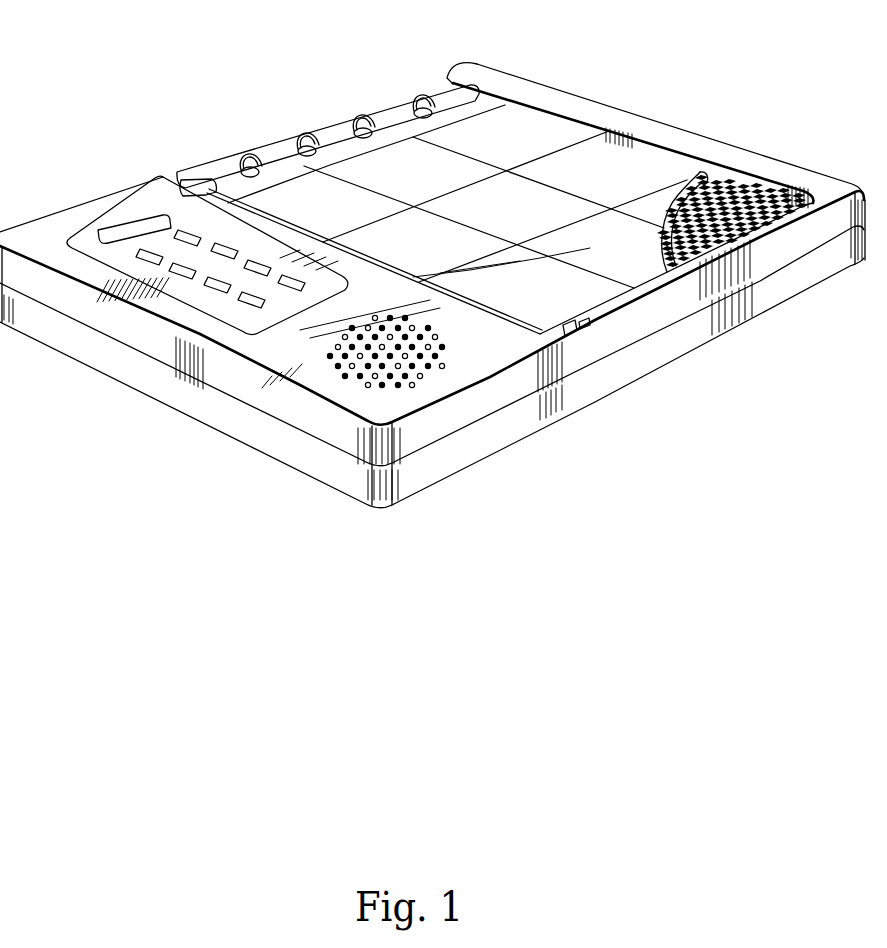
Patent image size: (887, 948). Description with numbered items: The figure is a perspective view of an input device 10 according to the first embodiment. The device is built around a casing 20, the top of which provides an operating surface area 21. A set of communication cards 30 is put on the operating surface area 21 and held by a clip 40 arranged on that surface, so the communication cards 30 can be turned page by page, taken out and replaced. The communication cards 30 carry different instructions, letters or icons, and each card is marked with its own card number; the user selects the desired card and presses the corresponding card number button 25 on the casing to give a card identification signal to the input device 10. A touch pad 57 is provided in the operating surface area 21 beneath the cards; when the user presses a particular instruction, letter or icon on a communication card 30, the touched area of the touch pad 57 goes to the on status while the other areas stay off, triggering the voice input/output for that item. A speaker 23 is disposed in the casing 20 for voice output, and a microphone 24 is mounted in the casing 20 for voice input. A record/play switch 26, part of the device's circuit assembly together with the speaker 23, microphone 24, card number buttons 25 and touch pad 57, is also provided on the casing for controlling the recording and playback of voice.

The input device 10 is at (742, 428).
The casing 20 is at (310, 465).
The operating surface area 21 is at (525, 142).
The speaker 23 is at (337, 376).
The microphone 24 is at (577, 334).
The card number button 25 is at (147, 257).
The record/play switch 26 is at (130, 228).
The communication card 30 is at (627, 277).
The clip 40 is at (393, 123).
The touch pad 57 is at (733, 237).